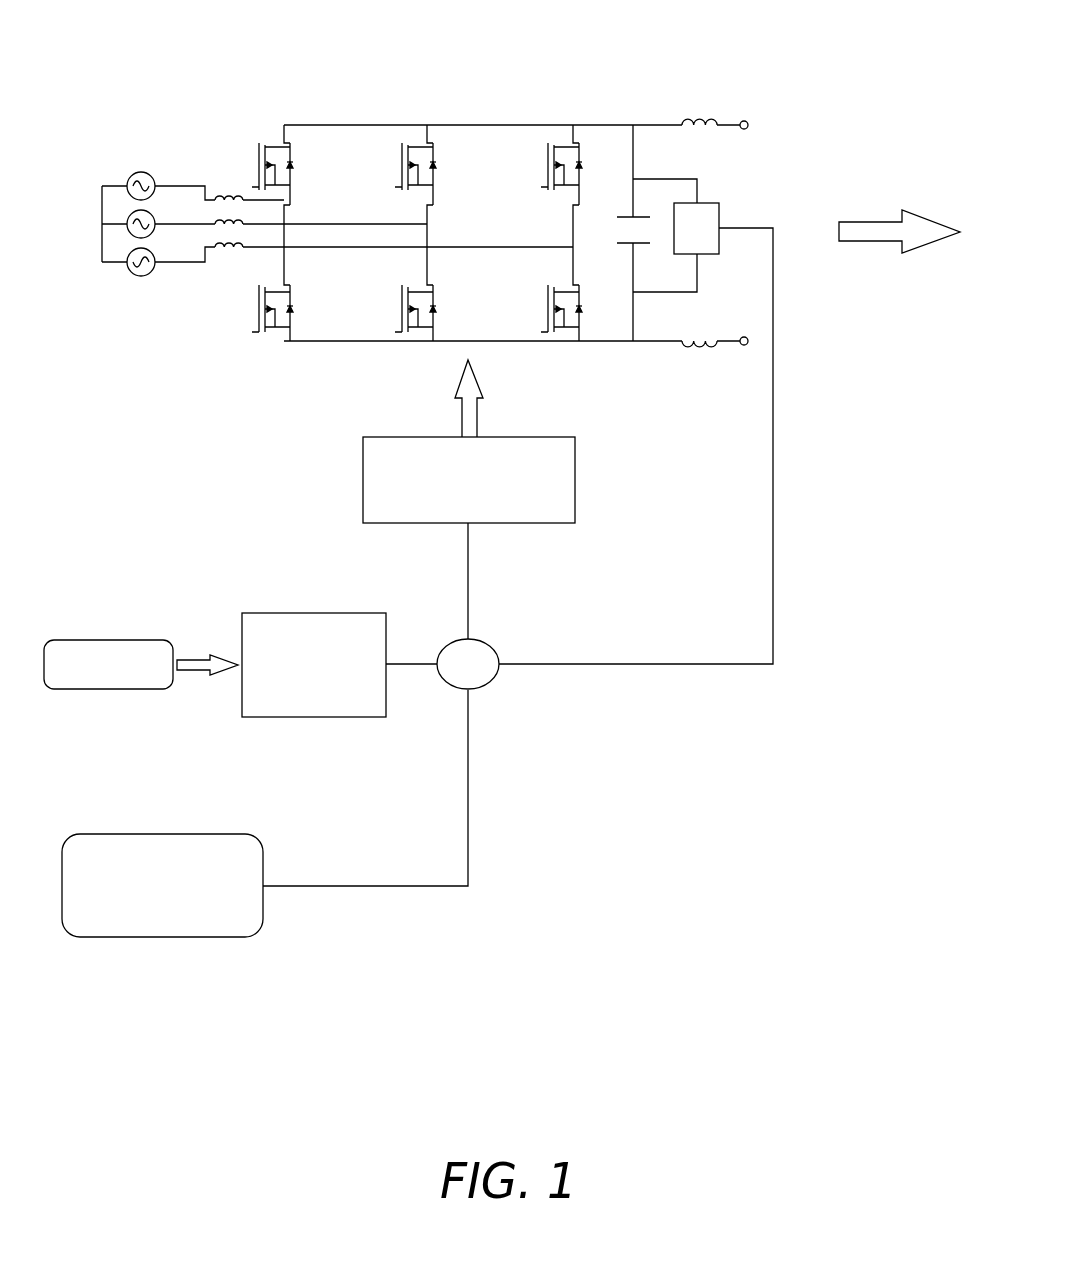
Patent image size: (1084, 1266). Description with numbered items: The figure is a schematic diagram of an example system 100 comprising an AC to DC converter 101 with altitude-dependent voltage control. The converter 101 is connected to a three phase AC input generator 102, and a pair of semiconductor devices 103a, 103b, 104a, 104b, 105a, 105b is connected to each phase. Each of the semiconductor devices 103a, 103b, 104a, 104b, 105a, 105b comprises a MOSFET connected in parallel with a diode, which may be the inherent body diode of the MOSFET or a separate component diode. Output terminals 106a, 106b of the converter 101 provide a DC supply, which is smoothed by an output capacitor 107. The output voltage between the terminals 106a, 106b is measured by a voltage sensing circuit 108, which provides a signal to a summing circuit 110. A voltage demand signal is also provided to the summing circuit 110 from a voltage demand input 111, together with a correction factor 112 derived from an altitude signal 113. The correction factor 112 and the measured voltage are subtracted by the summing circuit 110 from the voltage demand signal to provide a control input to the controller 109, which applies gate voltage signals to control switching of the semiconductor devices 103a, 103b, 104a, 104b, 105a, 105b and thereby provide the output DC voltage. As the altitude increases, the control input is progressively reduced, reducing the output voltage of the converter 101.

The system 100 is at (207, 468).
The AC to DC converter 101 is at (245, 84).
The three phase AC input generator 102 is at (113, 183).
The semiconductor device 103a is at (295, 178).
The semiconductor device 103b is at (292, 293).
The semiconductor device 104a is at (435, 178).
The semiconductor device 104b is at (435, 298).
The semiconductor device 105a is at (546, 168).
The semiconductor device 105b is at (546, 310).
The output terminal 106a is at (748, 123).
The output terminal 106b is at (744, 345).
The output capacitor 107 is at (628, 215).
The voltage sensing circuit 108 is at (708, 203).
The controller 109 is at (483, 495).
The summing circuit 110 is at (493, 677).
The voltage demand input 111 is at (176, 900).
The correction factor 112 is at (331, 678).
The altitude signal 113 is at (125, 678).